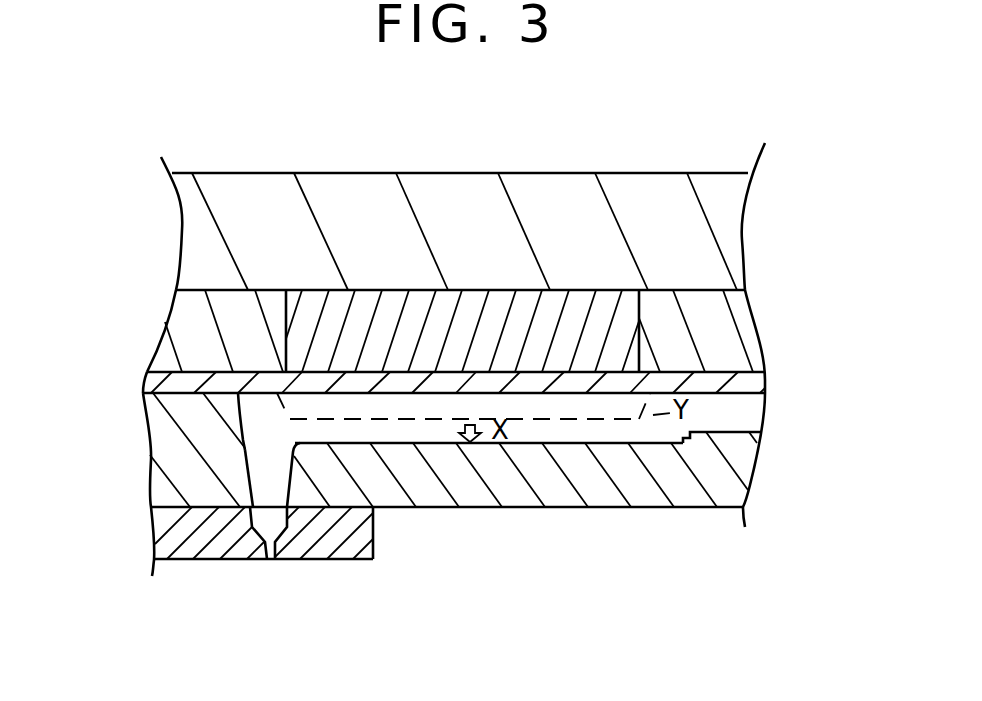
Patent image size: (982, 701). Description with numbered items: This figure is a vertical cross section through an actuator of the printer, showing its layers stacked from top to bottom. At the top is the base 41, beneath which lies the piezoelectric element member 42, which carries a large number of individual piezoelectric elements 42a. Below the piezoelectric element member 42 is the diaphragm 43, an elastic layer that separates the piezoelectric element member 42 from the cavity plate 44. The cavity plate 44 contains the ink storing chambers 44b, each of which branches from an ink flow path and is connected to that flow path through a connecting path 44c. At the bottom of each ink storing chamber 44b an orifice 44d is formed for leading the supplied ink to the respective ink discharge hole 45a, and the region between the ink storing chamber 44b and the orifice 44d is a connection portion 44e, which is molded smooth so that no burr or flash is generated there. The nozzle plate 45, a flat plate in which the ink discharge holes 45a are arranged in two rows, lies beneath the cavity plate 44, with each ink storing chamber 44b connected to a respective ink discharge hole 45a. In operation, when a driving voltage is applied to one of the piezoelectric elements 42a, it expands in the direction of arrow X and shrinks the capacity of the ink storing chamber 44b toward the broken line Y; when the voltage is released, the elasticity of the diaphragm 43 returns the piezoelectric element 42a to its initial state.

The base 41 is at (577, 188).
The piezoelectric element member 42 is at (733, 312).
The piezoelectric element 42a is at (303, 311).
The diaphragm 43 is at (725, 380).
The cavity plate 44 is at (505, 495).
The ink storing chamber 44b is at (688, 447).
The connecting path 44c is at (738, 412).
The orifice 44d is at (246, 480).
The connection portion 44e is at (241, 418).
The nozzle plate 45 is at (345, 552).
The ink discharge hole 45a is at (268, 560).